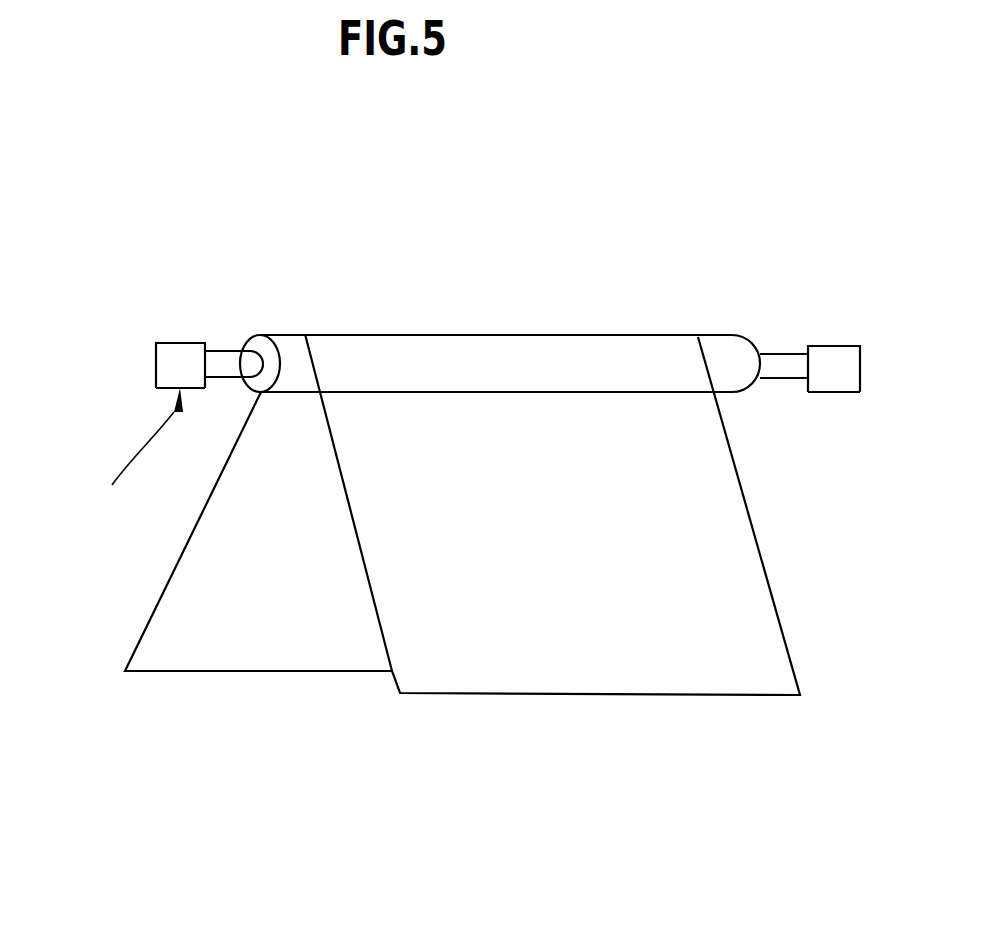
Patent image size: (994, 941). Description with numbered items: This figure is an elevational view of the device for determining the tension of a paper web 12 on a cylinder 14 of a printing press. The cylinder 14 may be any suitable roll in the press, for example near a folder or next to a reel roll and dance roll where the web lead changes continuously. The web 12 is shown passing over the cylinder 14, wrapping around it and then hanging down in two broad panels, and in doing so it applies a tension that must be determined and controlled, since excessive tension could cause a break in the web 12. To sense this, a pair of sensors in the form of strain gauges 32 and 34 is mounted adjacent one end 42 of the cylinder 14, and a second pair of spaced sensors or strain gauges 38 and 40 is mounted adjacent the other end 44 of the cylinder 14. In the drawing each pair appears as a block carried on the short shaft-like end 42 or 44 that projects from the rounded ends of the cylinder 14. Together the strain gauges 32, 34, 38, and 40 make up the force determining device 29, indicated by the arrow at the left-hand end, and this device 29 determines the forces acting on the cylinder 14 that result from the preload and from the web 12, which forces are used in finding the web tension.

The paper web 12 is at (447, 695).
The cylinder 14 is at (270, 334).
The force determining device 29 is at (129, 454).
The strain gauge 32 is at (156, 352).
The strain gauge 34 is at (156, 380).
The strain gauge 38 is at (825, 393).
The strain gauge 40 is at (832, 346).
The one end of the cylinder 42 is at (225, 349).
The other end of the cylinder 44 is at (777, 353).